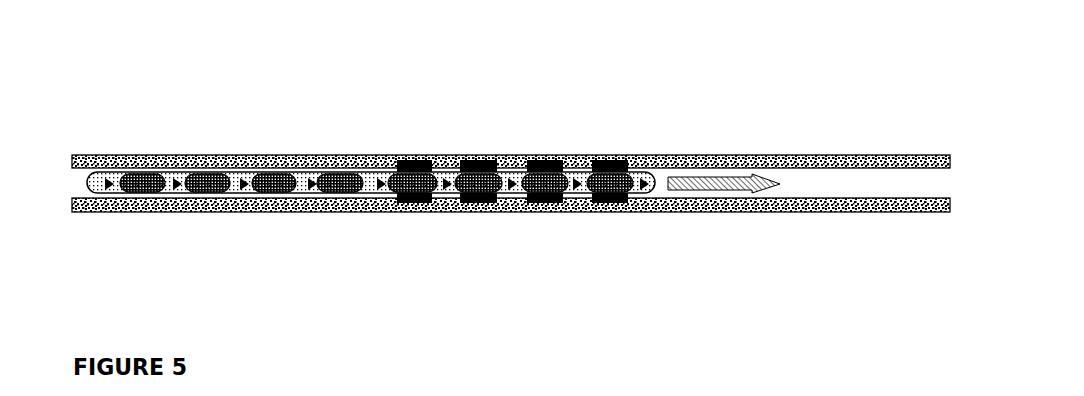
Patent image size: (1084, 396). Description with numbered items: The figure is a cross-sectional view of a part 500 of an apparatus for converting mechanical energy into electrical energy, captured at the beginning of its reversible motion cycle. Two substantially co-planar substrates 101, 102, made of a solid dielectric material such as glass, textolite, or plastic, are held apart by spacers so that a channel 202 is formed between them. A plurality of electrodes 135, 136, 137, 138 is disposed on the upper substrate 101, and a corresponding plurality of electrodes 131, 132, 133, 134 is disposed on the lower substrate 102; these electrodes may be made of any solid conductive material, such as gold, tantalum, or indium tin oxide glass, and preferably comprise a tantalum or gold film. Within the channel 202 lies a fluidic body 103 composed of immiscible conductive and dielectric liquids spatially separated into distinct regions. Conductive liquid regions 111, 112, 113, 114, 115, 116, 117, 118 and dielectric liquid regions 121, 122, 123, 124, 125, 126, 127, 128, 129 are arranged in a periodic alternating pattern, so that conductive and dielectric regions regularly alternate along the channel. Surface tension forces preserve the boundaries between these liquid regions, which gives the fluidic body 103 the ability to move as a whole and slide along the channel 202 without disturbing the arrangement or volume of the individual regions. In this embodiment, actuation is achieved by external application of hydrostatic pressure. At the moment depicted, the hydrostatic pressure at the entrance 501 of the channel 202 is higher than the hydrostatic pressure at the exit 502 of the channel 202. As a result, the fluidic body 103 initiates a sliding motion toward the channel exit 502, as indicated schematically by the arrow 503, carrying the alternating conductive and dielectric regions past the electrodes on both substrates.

The part of the apparatus 500 is at (903, 48).
The entrance of the channel 501 is at (54, 185).
The exit of the channel 502 is at (960, 184).
The arrow 503 is at (738, 169).
The substrate 101 is at (863, 140).
The substrate 102 is at (818, 222).
The fluidic body 103 is at (92, 186).
The channel 202 is at (856, 189).
The conductive liquid region 111 is at (145, 188).
The conductive liquid region 112 is at (215, 188).
The conductive liquid region 113 is at (285, 188).
The conductive liquid region 114 is at (348, 188).
The conductive liquid region 115 is at (410, 188).
The conductive liquid region 116 is at (476, 188).
The conductive liquid region 117 is at (543, 188).
The conductive liquid region 118 is at (610, 188).
The dielectric liquid region 121 is at (109, 187).
The dielectric liquid region 122 is at (177, 187).
The dielectric liquid region 123 is at (244, 187).
The dielectric liquid region 124 is at (312, 187).
The dielectric liquid region 125 is at (381, 187).
The dielectric liquid region 126 is at (447, 187).
The dielectric liquid region 127 is at (512, 187).
The dielectric liquid region 128 is at (577, 187).
The dielectric liquid region 129 is at (644, 187).
The electrode 131 is at (427, 196).
The electrode 132 is at (494, 196).
The electrode 133 is at (560, 196).
The electrode 134 is at (627, 196).
The electrode 135 is at (425, 159).
The electrode 136 is at (495, 159).
The electrode 137 is at (562, 159).
The electrode 138 is at (630, 159).